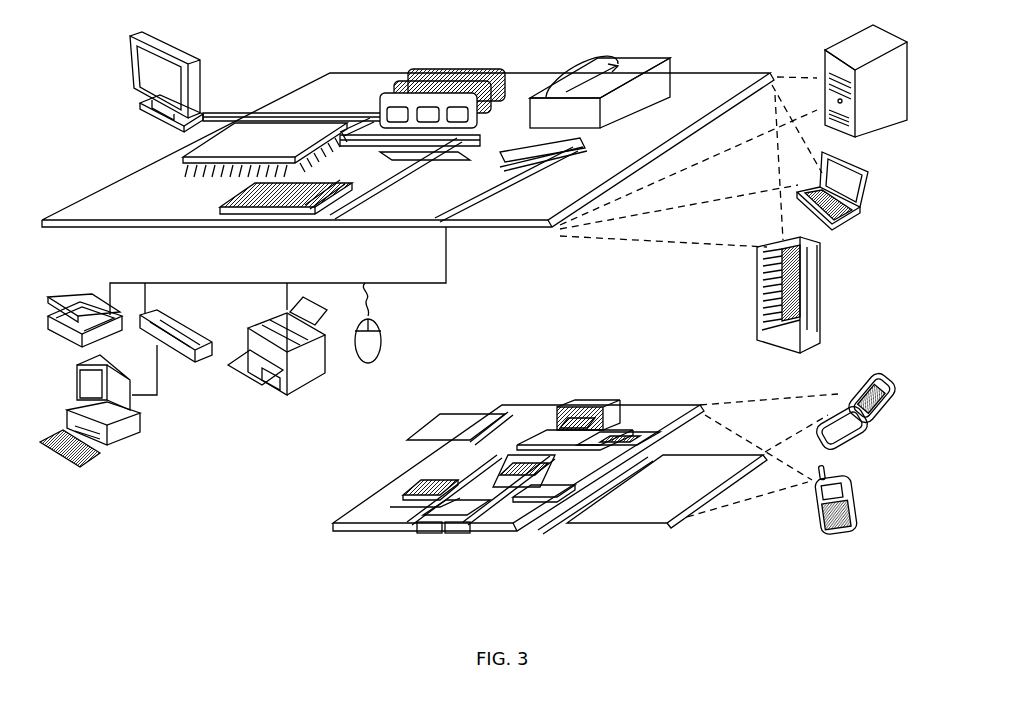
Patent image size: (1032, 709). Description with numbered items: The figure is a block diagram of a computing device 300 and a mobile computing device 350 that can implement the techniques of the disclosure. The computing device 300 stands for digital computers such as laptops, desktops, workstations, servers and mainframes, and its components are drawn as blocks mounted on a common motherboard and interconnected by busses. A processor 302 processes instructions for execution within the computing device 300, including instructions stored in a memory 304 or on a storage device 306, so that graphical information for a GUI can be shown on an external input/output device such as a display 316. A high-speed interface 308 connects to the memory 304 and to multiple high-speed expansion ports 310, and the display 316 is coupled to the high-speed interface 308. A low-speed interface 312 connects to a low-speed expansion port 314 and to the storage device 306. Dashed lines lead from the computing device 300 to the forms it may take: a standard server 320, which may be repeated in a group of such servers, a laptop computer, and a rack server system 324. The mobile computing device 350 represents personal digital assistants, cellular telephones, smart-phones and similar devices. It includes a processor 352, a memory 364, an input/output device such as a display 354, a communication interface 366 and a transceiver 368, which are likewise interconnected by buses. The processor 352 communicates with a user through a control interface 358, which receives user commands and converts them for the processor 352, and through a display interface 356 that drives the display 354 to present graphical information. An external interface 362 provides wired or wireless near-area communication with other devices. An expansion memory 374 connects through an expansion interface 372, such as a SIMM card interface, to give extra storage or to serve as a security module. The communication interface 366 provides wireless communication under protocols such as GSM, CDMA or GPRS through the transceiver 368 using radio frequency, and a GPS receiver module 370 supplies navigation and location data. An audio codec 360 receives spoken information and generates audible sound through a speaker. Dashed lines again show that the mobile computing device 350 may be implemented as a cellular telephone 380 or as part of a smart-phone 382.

The computing device 300 is at (275, 51).
The processor 302 is at (183, 157).
The memory 304 is at (419, 66).
The storage device 306 is at (593, 58).
The high-speed interface 308 is at (353, 103).
The high-speed expansion ports 310 is at (222, 200).
The low-speed interface 312 is at (528, 140).
The low-speed expansion port 314 is at (453, 221).
The display 316 is at (130, 35).
The standard server 320 is at (815, 63).
The rack server system 324 is at (745, 314).
The mobile computing device 350 is at (309, 537).
The processor 352 is at (457, 527).
The display 354 is at (637, 518).
The display interface 356 is at (523, 535).
The control interface 358 is at (545, 523).
The audio codec 360 is at (556, 512).
The external interface 362 is at (429, 535).
The memory 364 is at (391, 494).
The communication interface 366 is at (545, 425).
The transceiver 368 is at (608, 436).
The GPS receiver module 370 is at (582, 407).
The expansion interface 372 is at (500, 417).
The expansion memory 374 is at (438, 418).
The cellular telephone 380 is at (860, 378).
The smart-phone 382 is at (813, 507).